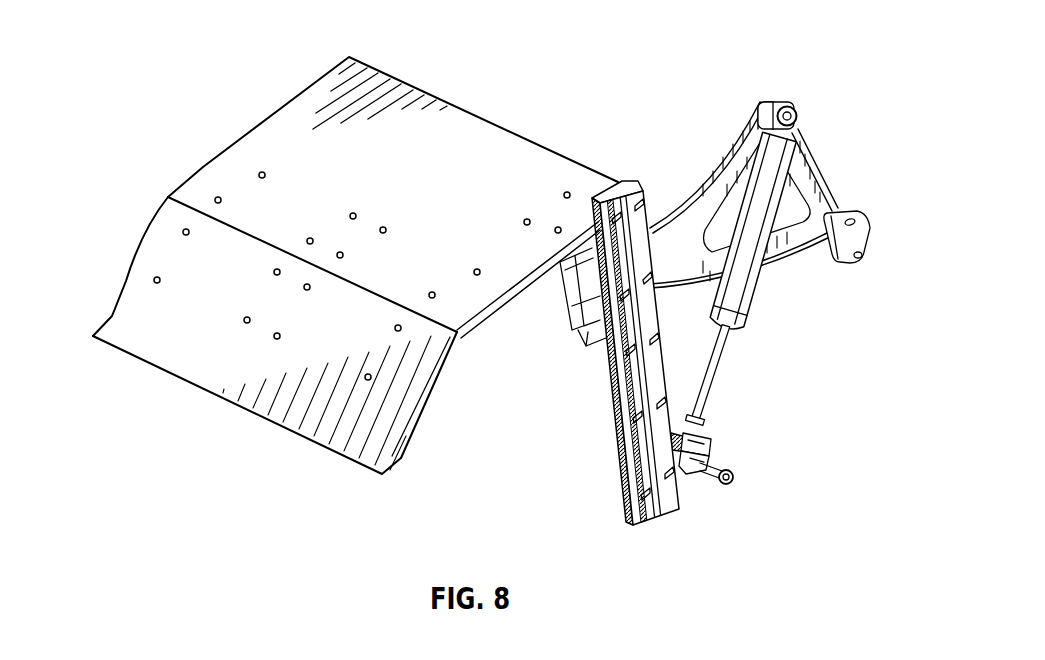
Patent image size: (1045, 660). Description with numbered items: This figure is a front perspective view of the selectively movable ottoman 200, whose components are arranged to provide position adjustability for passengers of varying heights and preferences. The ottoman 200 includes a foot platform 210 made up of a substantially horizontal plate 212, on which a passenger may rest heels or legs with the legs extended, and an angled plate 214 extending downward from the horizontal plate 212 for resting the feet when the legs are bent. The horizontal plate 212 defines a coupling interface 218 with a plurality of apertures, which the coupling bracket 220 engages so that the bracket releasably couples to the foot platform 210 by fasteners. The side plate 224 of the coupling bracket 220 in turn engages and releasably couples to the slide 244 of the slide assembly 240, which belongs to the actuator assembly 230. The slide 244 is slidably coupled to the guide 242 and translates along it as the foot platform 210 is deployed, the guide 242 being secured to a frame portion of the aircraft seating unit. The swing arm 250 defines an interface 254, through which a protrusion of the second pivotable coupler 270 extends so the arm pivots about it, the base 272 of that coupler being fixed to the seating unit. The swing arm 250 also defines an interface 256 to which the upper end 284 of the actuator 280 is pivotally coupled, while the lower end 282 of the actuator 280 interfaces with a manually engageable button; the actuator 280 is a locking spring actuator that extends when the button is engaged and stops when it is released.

The ottoman 200 is at (180, 78).
The foot platform 210 is at (119, 235).
The horizontal plate 212 is at (262, 137).
The angled plate 214 is at (118, 315).
The coupling interface 218 is at (578, 213).
The coupling bracket 220 is at (546, 288).
The side plate 224 is at (583, 325).
The actuator assembly 230 is at (850, 61).
The slide assembly 240 is at (591, 457).
The guide 242 is at (630, 500).
The slide 244 is at (603, 348).
The swing arm 250 is at (702, 157).
The interface 254 is at (829, 200).
The interface 256 is at (760, 88).
The second pivotable coupler 270 is at (834, 265).
The base 272 is at (873, 233).
The actuator 280 is at (766, 326).
The lower end 282 is at (695, 440).
The upper end 284 is at (778, 103).